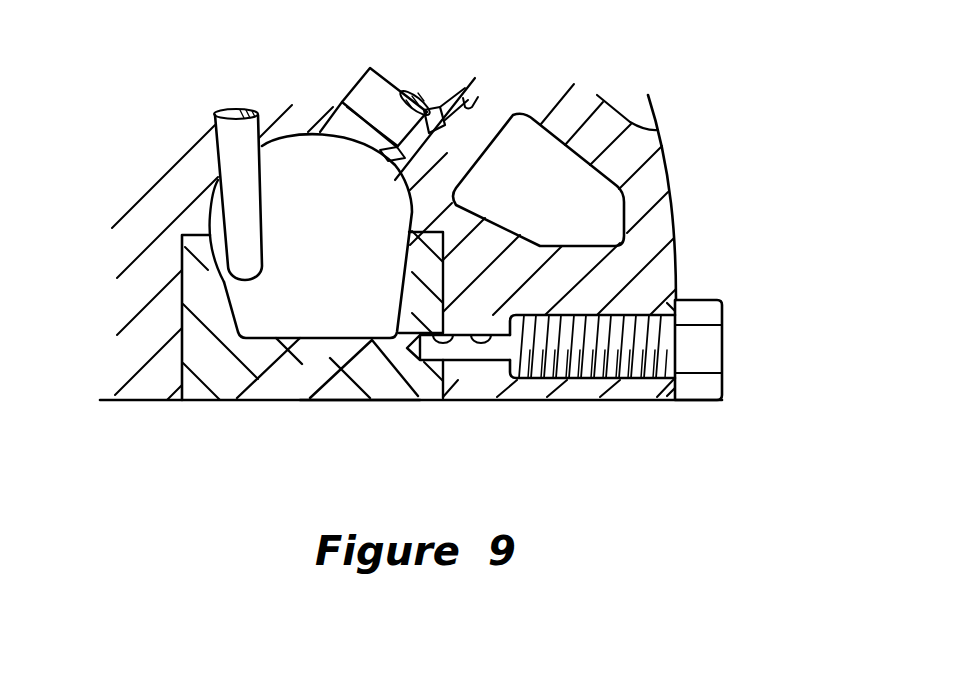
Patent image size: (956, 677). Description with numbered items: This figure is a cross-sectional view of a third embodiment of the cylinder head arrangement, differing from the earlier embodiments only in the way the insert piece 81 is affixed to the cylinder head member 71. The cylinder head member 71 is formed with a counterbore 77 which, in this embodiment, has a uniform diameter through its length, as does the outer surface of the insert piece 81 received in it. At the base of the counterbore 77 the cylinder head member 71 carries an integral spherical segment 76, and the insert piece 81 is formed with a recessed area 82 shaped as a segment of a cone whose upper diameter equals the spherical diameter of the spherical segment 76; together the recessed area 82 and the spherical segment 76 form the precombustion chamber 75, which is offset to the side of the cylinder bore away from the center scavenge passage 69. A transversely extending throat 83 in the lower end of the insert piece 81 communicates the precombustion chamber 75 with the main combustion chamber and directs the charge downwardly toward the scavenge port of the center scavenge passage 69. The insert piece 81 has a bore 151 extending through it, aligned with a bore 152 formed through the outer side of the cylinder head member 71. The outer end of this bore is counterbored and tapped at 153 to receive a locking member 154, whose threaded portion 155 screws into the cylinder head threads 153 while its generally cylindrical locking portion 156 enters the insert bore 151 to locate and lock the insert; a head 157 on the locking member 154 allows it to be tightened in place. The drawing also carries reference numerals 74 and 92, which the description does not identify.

The center scavenge passage 69 is at (671, 107).
The cylinder head member 71 is at (666, 165).
The bottom surface 74 is at (128, 400).
The precombustion chamber 75 is at (338, 157).
The spherical segment 76 is at (430, 193).
The counterbore 77 is at (187, 347).
The insert piece 81 is at (355, 399).
The recessed area 82 is at (382, 97).
The throat 83 is at (275, 387).
The tube 92 is at (226, 126).
The bore 151 is at (430, 330).
The bore 152 is at (467, 333).
The cylinder head threads 153 is at (598, 318).
The locking member 154 is at (577, 382).
The threaded portion 155 is at (640, 380).
The locking portion 156 is at (460, 353).
The head 157 is at (720, 317).